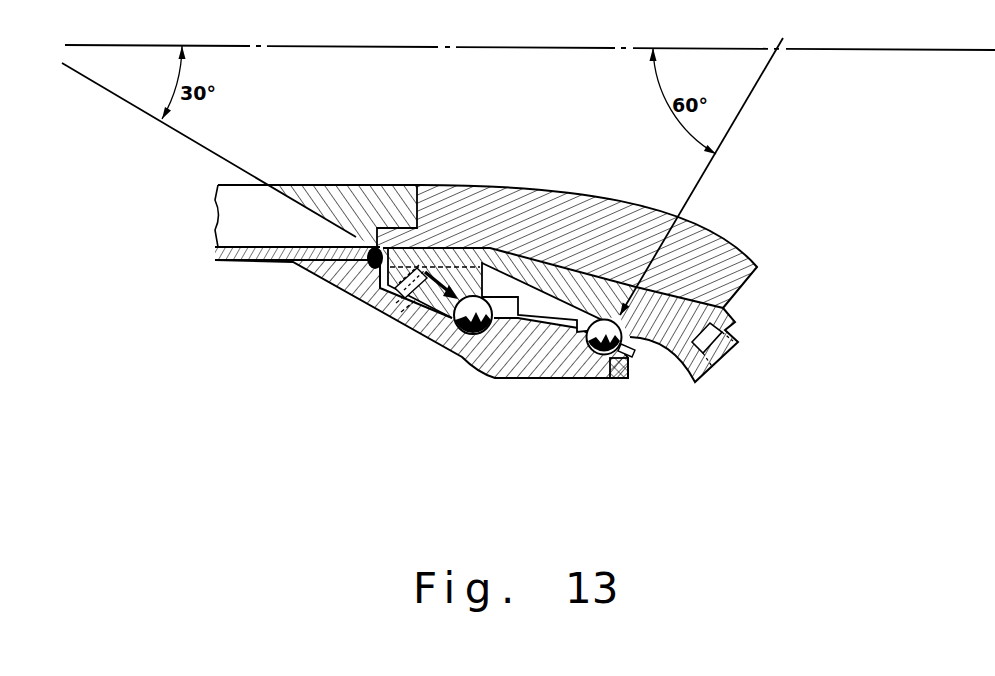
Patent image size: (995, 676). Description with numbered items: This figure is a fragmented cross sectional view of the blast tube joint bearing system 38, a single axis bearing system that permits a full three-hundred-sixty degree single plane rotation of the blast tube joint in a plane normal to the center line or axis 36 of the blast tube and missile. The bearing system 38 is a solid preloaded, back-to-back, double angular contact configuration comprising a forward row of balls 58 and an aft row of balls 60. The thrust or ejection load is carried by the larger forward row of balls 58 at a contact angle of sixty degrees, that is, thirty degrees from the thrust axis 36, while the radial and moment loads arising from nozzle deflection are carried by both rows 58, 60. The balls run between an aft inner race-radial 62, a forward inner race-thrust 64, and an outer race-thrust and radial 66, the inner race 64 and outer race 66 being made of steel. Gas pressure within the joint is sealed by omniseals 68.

The center line or axis 36 is at (372, 48).
The single axis bearing system 38 is at (421, 358).
The forward row of balls 58 is at (457, 323).
The aft row of balls 60 is at (625, 378).
The aft inner race-radial 62 is at (683, 317).
The forward inner race-thrust 64 is at (468, 283).
The outer race-thrust and radial 66 is at (528, 362).
The omniseals 68 is at (383, 256).